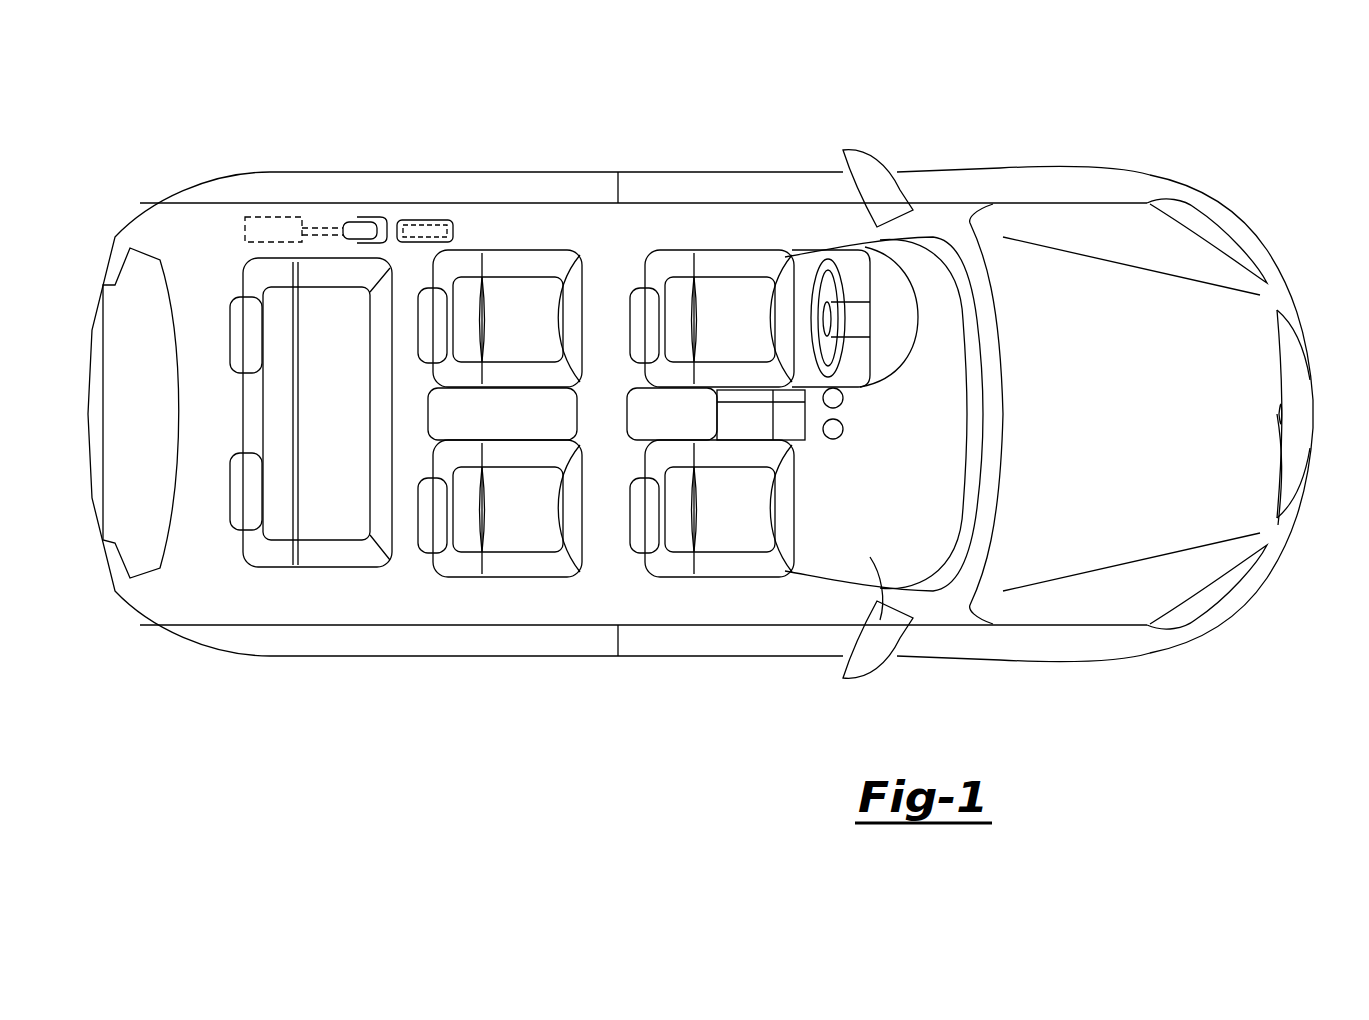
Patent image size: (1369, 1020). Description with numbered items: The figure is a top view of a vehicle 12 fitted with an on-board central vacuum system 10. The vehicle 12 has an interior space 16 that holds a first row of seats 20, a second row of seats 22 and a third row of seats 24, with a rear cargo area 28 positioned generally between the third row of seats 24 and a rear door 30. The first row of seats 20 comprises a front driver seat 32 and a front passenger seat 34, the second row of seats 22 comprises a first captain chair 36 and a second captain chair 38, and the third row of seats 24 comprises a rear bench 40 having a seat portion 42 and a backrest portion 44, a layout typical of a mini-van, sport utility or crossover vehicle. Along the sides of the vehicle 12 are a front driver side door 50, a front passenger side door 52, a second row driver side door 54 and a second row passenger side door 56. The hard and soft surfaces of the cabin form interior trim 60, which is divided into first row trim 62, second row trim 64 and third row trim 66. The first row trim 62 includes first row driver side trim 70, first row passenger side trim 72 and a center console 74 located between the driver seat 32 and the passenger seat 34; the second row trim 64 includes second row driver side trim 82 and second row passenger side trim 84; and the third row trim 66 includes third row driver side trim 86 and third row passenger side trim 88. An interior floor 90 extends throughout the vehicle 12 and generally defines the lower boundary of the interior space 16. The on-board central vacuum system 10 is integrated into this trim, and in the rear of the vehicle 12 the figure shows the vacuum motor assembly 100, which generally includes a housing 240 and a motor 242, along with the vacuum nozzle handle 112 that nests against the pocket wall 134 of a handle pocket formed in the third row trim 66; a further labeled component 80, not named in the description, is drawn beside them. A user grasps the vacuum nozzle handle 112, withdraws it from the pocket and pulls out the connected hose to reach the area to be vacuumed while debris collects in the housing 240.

The on-board central vacuum system 10 is at (318, 200).
The vehicle 12 is at (1160, 115).
The interior space 16 is at (617, 565).
The first row of seats 20 is at (770, 605).
The second row of seats 22 is at (540, 607).
The third row of seats 24 is at (297, 608).
The rear cargo area 28 is at (193, 557).
The rear door 30 is at (145, 413).
The front driver seat 32 is at (740, 287).
The front passenger seat 34 is at (755, 523).
The first captain chair 36 is at (530, 303).
The second captain chair 38 is at (533, 488).
The rear bench 40 is at (323, 437).
The seat portion 42 is at (342, 507).
The backrest portion 44 is at (280, 497).
The front driver side door 50 is at (659, 188).
The front passenger side door 52 is at (672, 642).
The second row driver side door 54 is at (540, 188).
The second row passenger side door 56 is at (500, 648).
The interior trim 60 is at (586, 216).
The first row trim 62 is at (740, 218).
The second row trim 64 is at (545, 218).
The third row trim 66 is at (333, 198).
The first row driver side trim 70 is at (702, 225).
The first row passenger side trim 72 is at (720, 608).
The center console 74 is at (667, 427).
The controller 80 is at (430, 220).
The second row driver side trim 82 is at (505, 230).
The second row passenger side trim 84 is at (490, 593).
The third row driver side trim 86 is at (307, 205).
The third row passenger side trim 88 is at (357, 597).
The interior floor 90 is at (418, 427).
The vacuum motor assembly 100 is at (245, 230).
The vacuum nozzle handle 112 is at (390, 205).
The pocket wall 134 is at (360, 222).
The housing 240 is at (262, 217).
The motor 242 is at (262, 243).